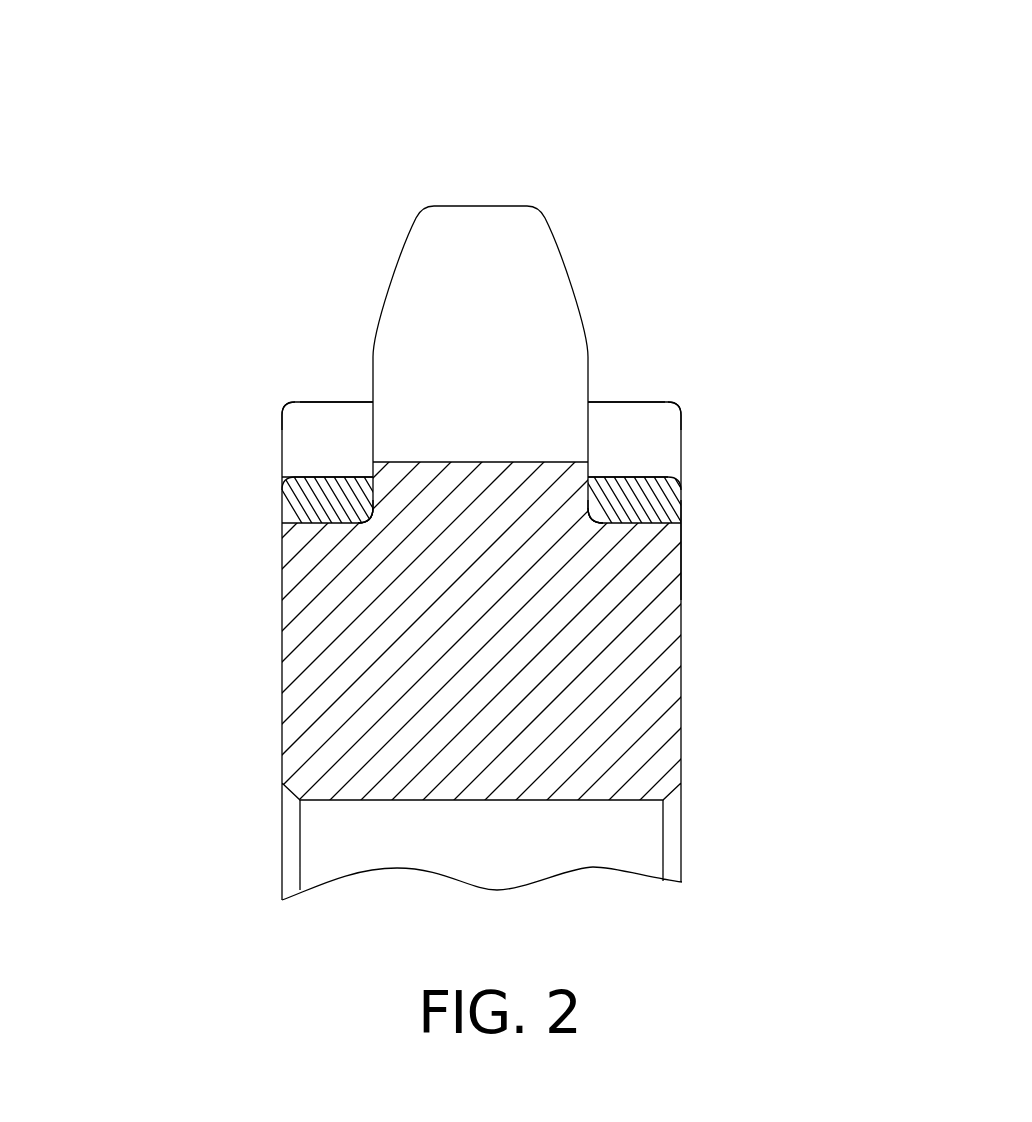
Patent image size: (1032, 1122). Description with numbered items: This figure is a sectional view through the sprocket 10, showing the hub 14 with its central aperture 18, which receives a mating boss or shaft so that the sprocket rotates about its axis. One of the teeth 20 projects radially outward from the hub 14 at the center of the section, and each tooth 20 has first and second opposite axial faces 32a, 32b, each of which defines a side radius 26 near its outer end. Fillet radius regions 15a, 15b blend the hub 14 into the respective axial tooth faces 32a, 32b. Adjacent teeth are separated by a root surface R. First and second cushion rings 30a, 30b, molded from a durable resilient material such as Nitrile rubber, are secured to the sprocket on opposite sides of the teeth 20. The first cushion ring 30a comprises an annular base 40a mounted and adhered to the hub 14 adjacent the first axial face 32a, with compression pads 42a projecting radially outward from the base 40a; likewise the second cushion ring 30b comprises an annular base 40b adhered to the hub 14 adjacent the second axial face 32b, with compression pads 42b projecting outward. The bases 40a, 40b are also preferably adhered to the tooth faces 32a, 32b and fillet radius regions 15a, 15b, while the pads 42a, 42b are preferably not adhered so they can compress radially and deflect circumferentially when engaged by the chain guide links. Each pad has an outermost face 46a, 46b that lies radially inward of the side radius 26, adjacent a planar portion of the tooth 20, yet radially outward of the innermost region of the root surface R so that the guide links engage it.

The sprocket 10 is at (262, 552).
The hub 14 is at (681, 542).
The fillet radius region 15a is at (347, 492).
The fillet radius region 15b is at (630, 495).
The central aperture 18 is at (537, 802).
The teeth 20 is at (485, 215).
The side radius 26 is at (357, 323).
The first cushion ring 30a is at (258, 477).
The second cushion ring 30b is at (705, 478).
The first axial face 32a is at (372, 443).
The second axial face 32b is at (588, 442).
The annular base 40a is at (310, 500).
The annular base 40b is at (667, 497).
The compression pads 42a is at (278, 418).
The compression pads 42b is at (680, 417).
The outermost face 46a is at (317, 402).
The outermost face 46b is at (627, 402).
The root surface R is at (338, 497).